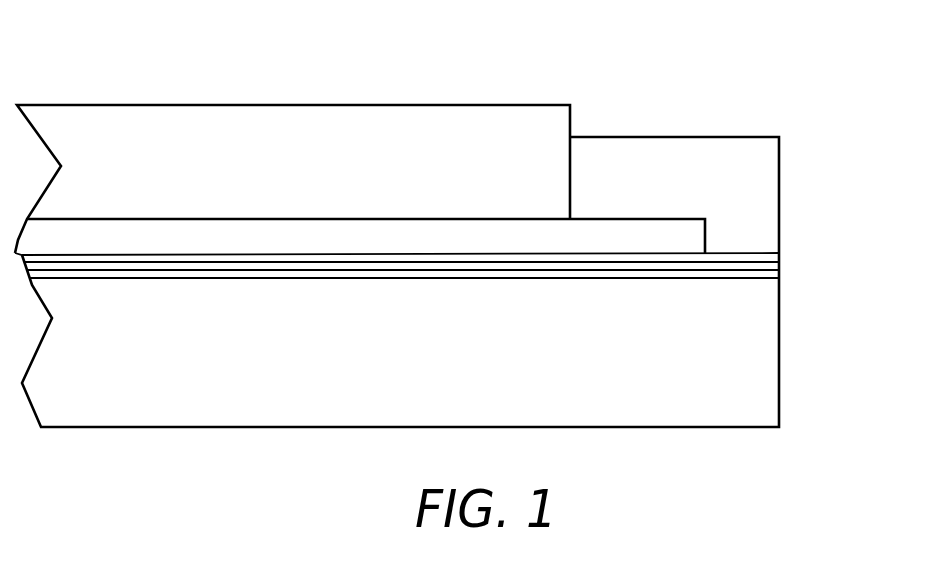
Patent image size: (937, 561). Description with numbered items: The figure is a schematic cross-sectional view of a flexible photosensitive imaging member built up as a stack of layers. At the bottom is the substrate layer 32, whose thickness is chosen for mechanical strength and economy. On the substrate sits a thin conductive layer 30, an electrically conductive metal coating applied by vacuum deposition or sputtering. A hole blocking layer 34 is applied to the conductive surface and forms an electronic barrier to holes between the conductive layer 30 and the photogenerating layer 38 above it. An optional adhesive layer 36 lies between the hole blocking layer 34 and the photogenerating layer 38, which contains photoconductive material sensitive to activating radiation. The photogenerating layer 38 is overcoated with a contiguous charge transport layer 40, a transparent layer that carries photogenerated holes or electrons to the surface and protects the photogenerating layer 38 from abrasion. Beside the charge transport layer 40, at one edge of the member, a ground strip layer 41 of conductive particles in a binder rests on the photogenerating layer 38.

The conductive layer 30 is at (765, 275).
The substrate layer 32 is at (752, 352).
The hole blocking layer 34 is at (763, 265).
The adhesive layer 36 is at (772, 258).
The photogenerating layer 38 is at (693, 238).
The charge transport layer 40 is at (517, 122).
The ground strip layer 41 is at (732, 148).